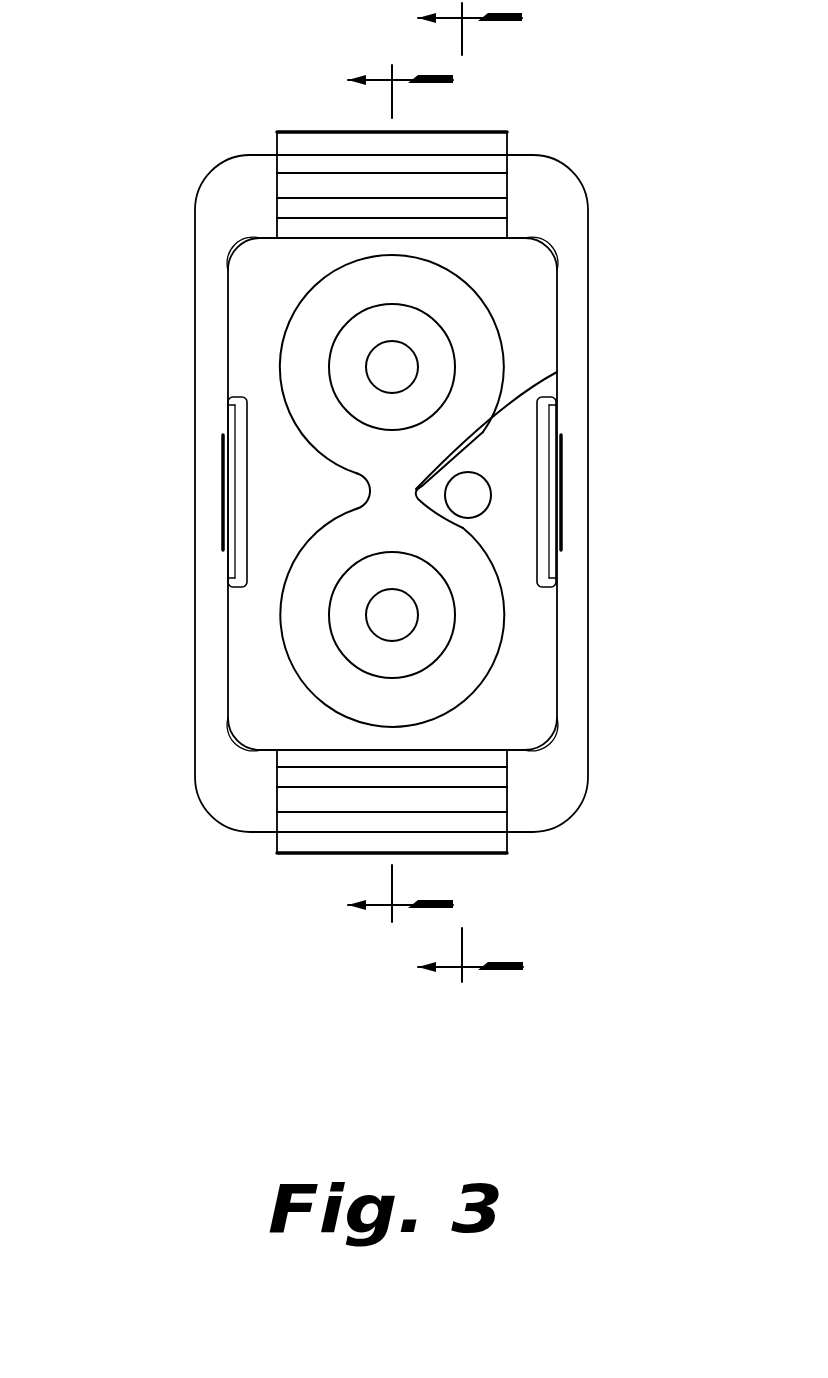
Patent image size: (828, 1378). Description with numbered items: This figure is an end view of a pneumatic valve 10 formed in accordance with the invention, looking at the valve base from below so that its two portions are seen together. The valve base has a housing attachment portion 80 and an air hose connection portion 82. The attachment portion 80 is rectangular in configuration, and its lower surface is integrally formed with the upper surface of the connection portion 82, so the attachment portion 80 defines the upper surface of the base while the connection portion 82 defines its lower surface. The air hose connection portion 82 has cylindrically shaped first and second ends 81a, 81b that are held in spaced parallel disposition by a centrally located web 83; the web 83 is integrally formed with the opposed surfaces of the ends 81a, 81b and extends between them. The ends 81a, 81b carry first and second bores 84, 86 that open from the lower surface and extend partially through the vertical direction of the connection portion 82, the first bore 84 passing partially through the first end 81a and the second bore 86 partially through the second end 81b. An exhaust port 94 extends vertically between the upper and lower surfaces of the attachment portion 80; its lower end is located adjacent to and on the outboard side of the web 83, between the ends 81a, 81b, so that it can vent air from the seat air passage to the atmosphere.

The latch assembly 10 is at (167, 115).
The housing attachment portion 80 is at (590, 751).
The first end 81a is at (492, 312).
The second end 81b is at (505, 618).
The air hose connection portion 82 is at (290, 320).
The web 83 is at (557, 372).
The first bore 84 is at (328, 367).
The second bore 86 is at (335, 648).
The exhaust port 94 is at (491, 491).